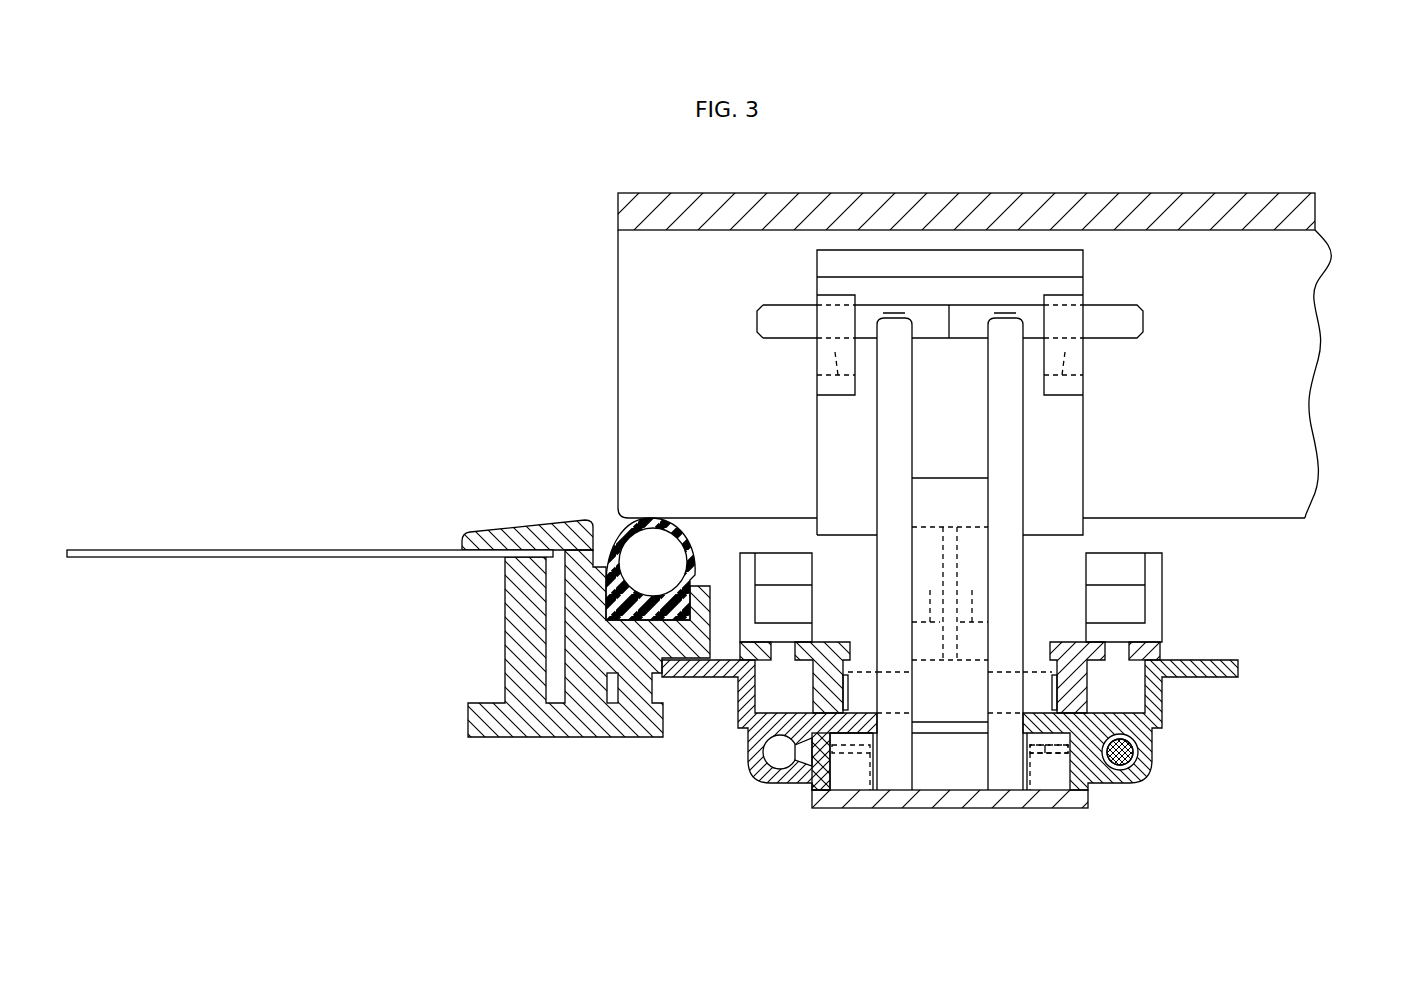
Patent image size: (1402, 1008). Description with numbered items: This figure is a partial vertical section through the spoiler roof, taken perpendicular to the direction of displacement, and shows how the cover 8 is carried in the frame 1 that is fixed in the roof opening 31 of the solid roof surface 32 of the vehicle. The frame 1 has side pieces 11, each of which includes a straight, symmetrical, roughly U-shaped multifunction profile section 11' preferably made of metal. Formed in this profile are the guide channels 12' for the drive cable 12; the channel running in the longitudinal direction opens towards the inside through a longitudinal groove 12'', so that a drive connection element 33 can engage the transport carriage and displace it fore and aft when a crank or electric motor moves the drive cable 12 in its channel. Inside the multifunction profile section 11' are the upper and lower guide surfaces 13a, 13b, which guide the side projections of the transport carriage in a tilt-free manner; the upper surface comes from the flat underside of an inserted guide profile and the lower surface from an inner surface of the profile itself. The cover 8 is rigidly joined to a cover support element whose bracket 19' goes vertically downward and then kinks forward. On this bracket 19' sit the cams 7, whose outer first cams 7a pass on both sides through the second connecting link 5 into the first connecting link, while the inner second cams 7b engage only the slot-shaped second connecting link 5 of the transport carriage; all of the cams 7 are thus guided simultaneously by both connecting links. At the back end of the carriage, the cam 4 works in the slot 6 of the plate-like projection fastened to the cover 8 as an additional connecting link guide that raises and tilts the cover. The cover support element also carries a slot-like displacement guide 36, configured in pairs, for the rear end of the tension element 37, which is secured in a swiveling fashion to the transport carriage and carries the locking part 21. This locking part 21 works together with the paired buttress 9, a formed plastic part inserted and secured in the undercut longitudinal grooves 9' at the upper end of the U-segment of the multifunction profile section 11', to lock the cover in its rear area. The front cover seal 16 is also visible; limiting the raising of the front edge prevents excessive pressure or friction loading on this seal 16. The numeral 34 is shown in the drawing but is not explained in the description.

The frame 1 is at (537, 520).
The cam 4 is at (975, 602).
The second connecting link 5 is at (1010, 775).
The slot 6 is at (925, 548).
The cam 7 is at (1008, 716).
The first cams 7a is at (1036, 685).
The second cams 7b is at (1005, 672).
The cover 8 is at (1288, 301).
The buttress 9 is at (976, 557).
The undercut longitudinal grooves 9' is at (1156, 666).
The side pieces 11 is at (512, 643).
The multifunction profile section 11' is at (987, 716).
The drive cable 12 is at (1138, 790).
The guide channels 12' is at (1162, 761).
The longitudinal groove 12'' is at (752, 775).
The upper guide surface 13a is at (830, 790).
The lower guide surface 13b is at (873, 793).
The front cover seal 16 is at (640, 532).
The bracket 19' is at (1024, 569).
The locking part 21 is at (1110, 316).
The roof opening 31 is at (1320, 563).
The roof surface 32 is at (300, 550).
The drive connection element 33 is at (1090, 790).
The bottom plate bore 34 is at (1043, 760).
The displacement guide 36 is at (1080, 352).
The tension element 37 is at (896, 428).